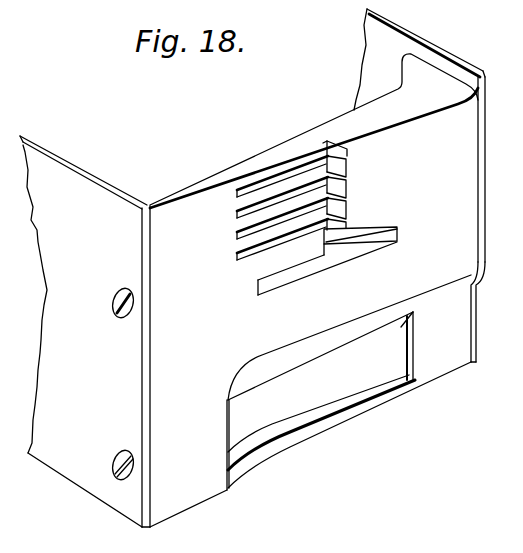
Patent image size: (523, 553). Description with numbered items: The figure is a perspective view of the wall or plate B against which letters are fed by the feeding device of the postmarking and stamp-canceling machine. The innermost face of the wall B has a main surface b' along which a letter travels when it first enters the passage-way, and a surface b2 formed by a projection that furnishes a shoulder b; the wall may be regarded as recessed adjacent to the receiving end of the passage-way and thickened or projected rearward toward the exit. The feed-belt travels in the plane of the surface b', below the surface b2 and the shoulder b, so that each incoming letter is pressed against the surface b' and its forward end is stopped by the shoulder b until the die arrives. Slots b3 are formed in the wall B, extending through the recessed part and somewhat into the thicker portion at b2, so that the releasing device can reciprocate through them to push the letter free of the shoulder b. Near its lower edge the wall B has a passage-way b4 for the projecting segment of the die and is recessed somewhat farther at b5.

The wall B is at (252, 296).
The shoulder b is at (335, 130).
The main surface b' is at (319, 281).
The surface b2 is at (418, 105).
The slots b3 is at (256, 188).
The passage-way b4 is at (382, 372).
The recess b5 is at (335, 391).